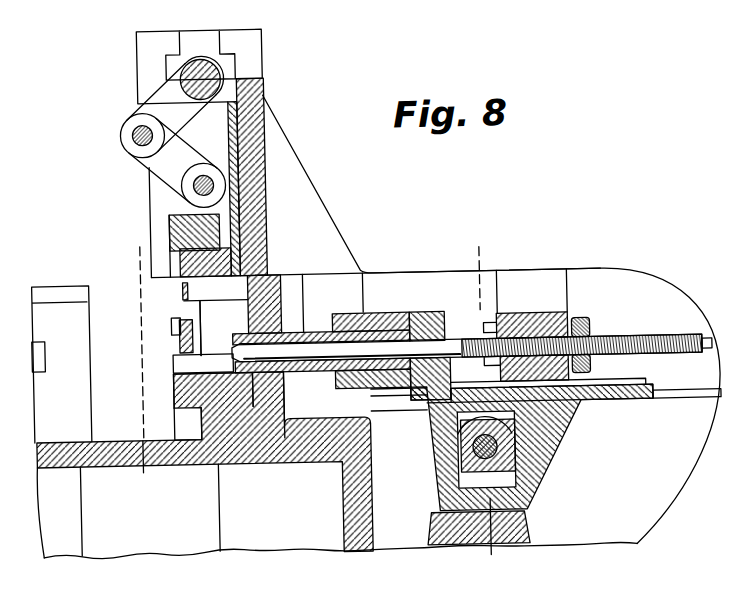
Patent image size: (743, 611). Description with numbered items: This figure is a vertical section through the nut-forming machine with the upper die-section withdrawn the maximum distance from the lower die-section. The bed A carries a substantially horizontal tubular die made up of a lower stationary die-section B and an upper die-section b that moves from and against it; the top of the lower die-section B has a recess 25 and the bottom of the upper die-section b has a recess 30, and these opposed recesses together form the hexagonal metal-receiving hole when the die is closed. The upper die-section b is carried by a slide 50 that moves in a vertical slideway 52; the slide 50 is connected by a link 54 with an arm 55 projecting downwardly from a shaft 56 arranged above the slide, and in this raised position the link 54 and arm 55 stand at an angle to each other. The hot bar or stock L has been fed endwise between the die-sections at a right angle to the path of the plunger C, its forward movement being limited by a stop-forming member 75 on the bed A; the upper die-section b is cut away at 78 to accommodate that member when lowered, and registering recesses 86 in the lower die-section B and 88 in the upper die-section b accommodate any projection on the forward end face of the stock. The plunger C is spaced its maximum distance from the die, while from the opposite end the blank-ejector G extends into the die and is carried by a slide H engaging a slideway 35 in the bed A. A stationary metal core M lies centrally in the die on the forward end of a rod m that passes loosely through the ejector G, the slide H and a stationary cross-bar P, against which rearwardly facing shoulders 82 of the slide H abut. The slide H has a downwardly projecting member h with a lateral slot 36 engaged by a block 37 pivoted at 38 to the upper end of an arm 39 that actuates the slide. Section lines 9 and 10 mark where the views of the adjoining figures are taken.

The shaft 56 is at (206, 74).
The arm 55 is at (155, 100).
The link 54 is at (168, 168).
The slideway 52 is at (248, 134).
The slide 50 is at (247, 170).
The recess 30 is at (293, 236).
The recess or cut-away 78 is at (172, 226).
The section line 10— 10 is at (147, 273).
The recess 88 is at (184, 290).
The stop-forming member 75 is at (170, 319).
The recess 86 is at (173, 355).
The recess 25 is at (173, 376).
The section line 9— 9 is at (491, 262).
The rearwardly facing shoulders 82 is at (511, 314).
The slideway 35 is at (655, 408).
The pivot 38 is at (495, 451).
The block 37 is at (505, 463).
The lateral slot 36 is at (508, 470).
The arm 39 is at (453, 534).
The upper die-section b is at (222, 244).
The metal rod m is at (430, 344).
The downwardly projecting member h is at (556, 439).
The blank-ejector G is at (313, 332).
The slide H is at (423, 313).
The stationary metal core M is at (224, 352).
The hot bar or stock L is at (178, 334).
The lower stationary die-section B is at (185, 404).
The cross-bar P is at (561, 319).
The plunger C is at (45, 365).
The bed A is at (261, 534).